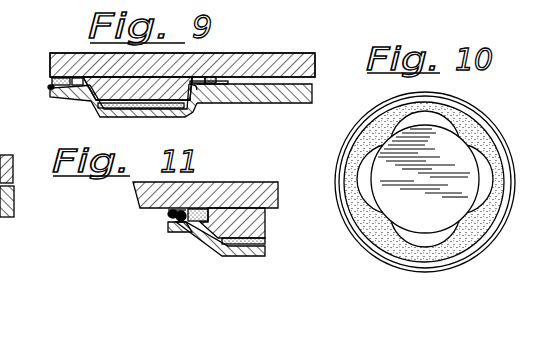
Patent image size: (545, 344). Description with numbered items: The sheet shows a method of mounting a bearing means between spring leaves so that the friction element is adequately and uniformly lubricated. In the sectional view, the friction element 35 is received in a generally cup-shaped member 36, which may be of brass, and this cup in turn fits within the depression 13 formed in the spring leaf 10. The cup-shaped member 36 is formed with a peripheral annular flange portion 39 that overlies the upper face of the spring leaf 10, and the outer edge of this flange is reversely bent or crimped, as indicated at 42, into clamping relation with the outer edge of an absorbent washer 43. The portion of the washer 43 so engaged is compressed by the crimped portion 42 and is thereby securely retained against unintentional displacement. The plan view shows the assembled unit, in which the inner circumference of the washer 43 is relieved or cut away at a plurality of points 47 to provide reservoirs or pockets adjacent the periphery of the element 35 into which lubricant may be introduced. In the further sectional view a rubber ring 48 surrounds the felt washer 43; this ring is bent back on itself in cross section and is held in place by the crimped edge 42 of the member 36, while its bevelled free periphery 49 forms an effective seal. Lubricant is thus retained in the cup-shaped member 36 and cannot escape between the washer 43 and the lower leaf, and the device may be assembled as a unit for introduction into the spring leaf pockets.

In FIG. 9, the spring leaf 10 is at (268, 103).
In FIG. 9, the depression 13 is at (152, 110).
In FIG. 9, the friction element 35 is at (93, 84).
In FIG. 10, the friction element 35 is at (382, 195).
In FIG. 9, the cup-shaped member 36 is at (89, 91).
In FIG. 9, the peripheral annular flange portion 39 is at (196, 88).
In FIG. 9, the reversely bent or crimped portion 42 is at (233, 80).
In FIG. 10, the reversely bent or crimped portion 42 is at (490, 238).
In FIG. 9, the absorbent washer 43 is at (217, 78).
In FIG. 10, the absorbent washer 43 is at (353, 155).
In FIG. 10, the relieved or cut-away points 47 is at (430, 120).
In FIG. 11, the rubber ring 48 is at (179, 230).
In FIG. 11, the bevelled free periphery 49 is at (172, 212).